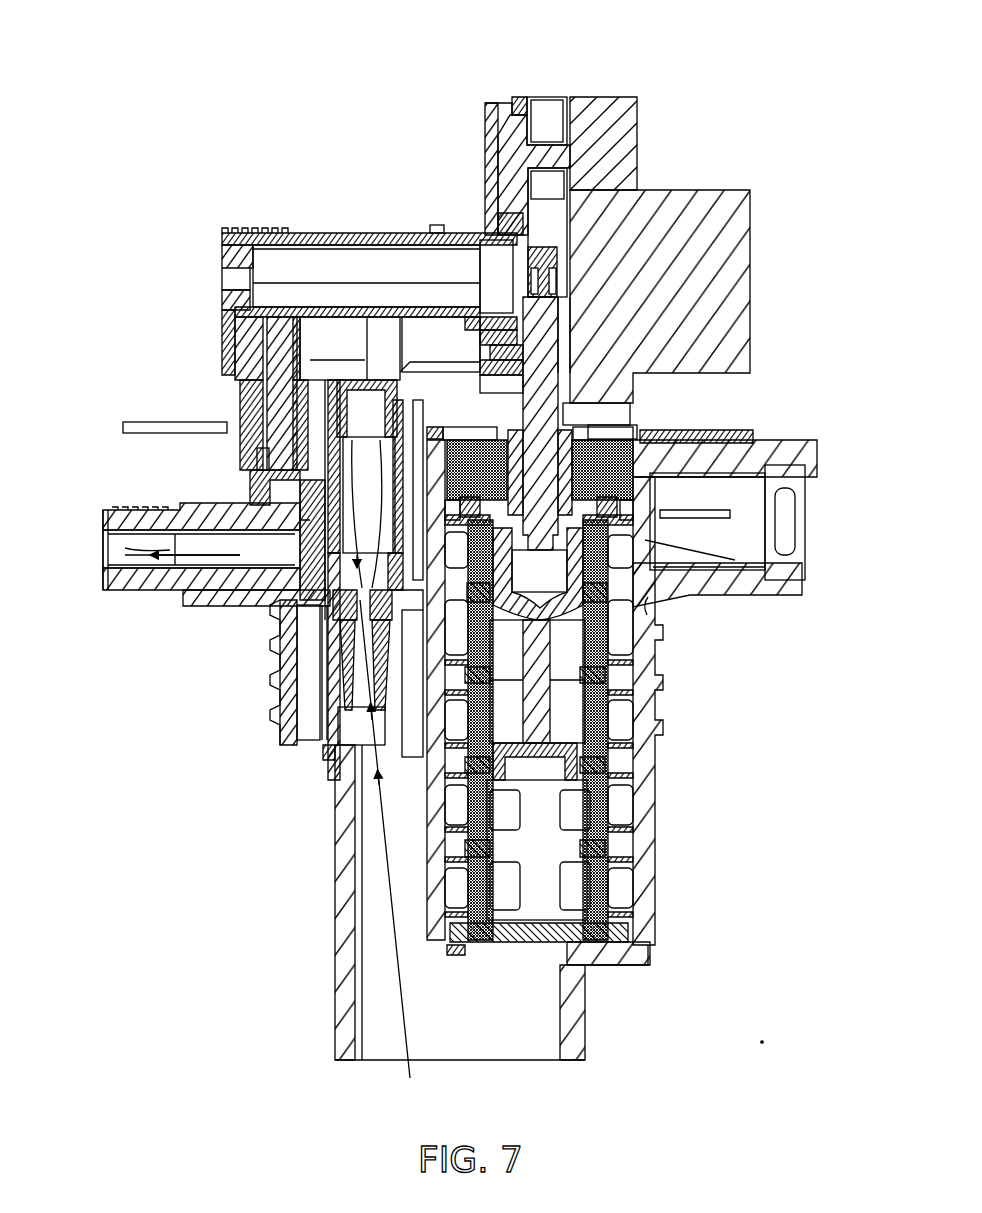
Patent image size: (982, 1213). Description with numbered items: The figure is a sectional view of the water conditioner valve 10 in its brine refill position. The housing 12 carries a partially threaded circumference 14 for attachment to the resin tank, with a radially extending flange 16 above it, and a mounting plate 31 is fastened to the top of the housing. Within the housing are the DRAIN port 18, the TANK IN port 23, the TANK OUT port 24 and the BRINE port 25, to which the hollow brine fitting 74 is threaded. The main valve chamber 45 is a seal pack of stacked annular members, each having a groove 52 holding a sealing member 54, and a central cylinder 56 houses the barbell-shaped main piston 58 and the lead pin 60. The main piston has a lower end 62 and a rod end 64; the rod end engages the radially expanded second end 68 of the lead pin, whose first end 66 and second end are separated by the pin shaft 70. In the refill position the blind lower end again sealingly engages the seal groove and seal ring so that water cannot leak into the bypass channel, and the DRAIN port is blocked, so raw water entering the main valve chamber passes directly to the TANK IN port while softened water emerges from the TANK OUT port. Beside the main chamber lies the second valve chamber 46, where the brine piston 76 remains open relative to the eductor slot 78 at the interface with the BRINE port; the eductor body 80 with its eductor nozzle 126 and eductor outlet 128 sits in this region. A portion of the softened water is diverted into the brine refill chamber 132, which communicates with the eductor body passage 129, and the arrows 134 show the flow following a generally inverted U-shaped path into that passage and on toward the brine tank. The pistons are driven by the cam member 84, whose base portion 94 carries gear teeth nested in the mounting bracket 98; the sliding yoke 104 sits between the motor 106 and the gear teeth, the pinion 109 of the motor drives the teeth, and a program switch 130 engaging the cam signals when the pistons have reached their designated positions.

The water conditioner valve 10 is at (752, 156).
The housing 12 is at (335, 985).
The partially threaded circumference 14 is at (662, 683).
The flange 16 is at (693, 592).
The DRAIN port 18 is at (805, 470).
The TANK IN port 23 is at (628, 967).
The TANK OUT port 24 is at (377, 1062).
The BRINE port 25 is at (197, 592).
The mounting plate 31 is at (755, 437).
The main valve chamber 45 is at (632, 770).
The second valve chamber 46 is at (360, 460).
The groove 52 is at (520, 880).
The sealing member 54 is at (560, 860).
The cylinder 56 is at (570, 810).
The main piston 58 is at (560, 718).
The lead pin 60 is at (628, 432).
The lower end 62 is at (615, 752).
The rod end 64 is at (660, 633).
The first end 66 is at (553, 252).
The second end 68 is at (620, 547).
The pin shaft 70 is at (545, 395).
The brine fitting 74 is at (124, 590).
The brine piston 76 is at (275, 412).
The eductor slot 78 is at (257, 507).
The eductor body 80 is at (330, 485).
The cam member 84 is at (397, 270).
The base portion 94 is at (495, 245).
The mounting bracket 98 is at (519, 97).
The sliding yoke 104 is at (556, 97).
The motor 106 is at (755, 265).
The pinion 109 is at (492, 105).
The eductor nozzle 126 is at (355, 672).
The eductor outlet 128 is at (305, 600).
The eductor body passage 129 is at (245, 430).
The program switch 130 is at (437, 225).
The brine refill chamber 132 is at (138, 548).
The arrows 134 is at (455, 862).